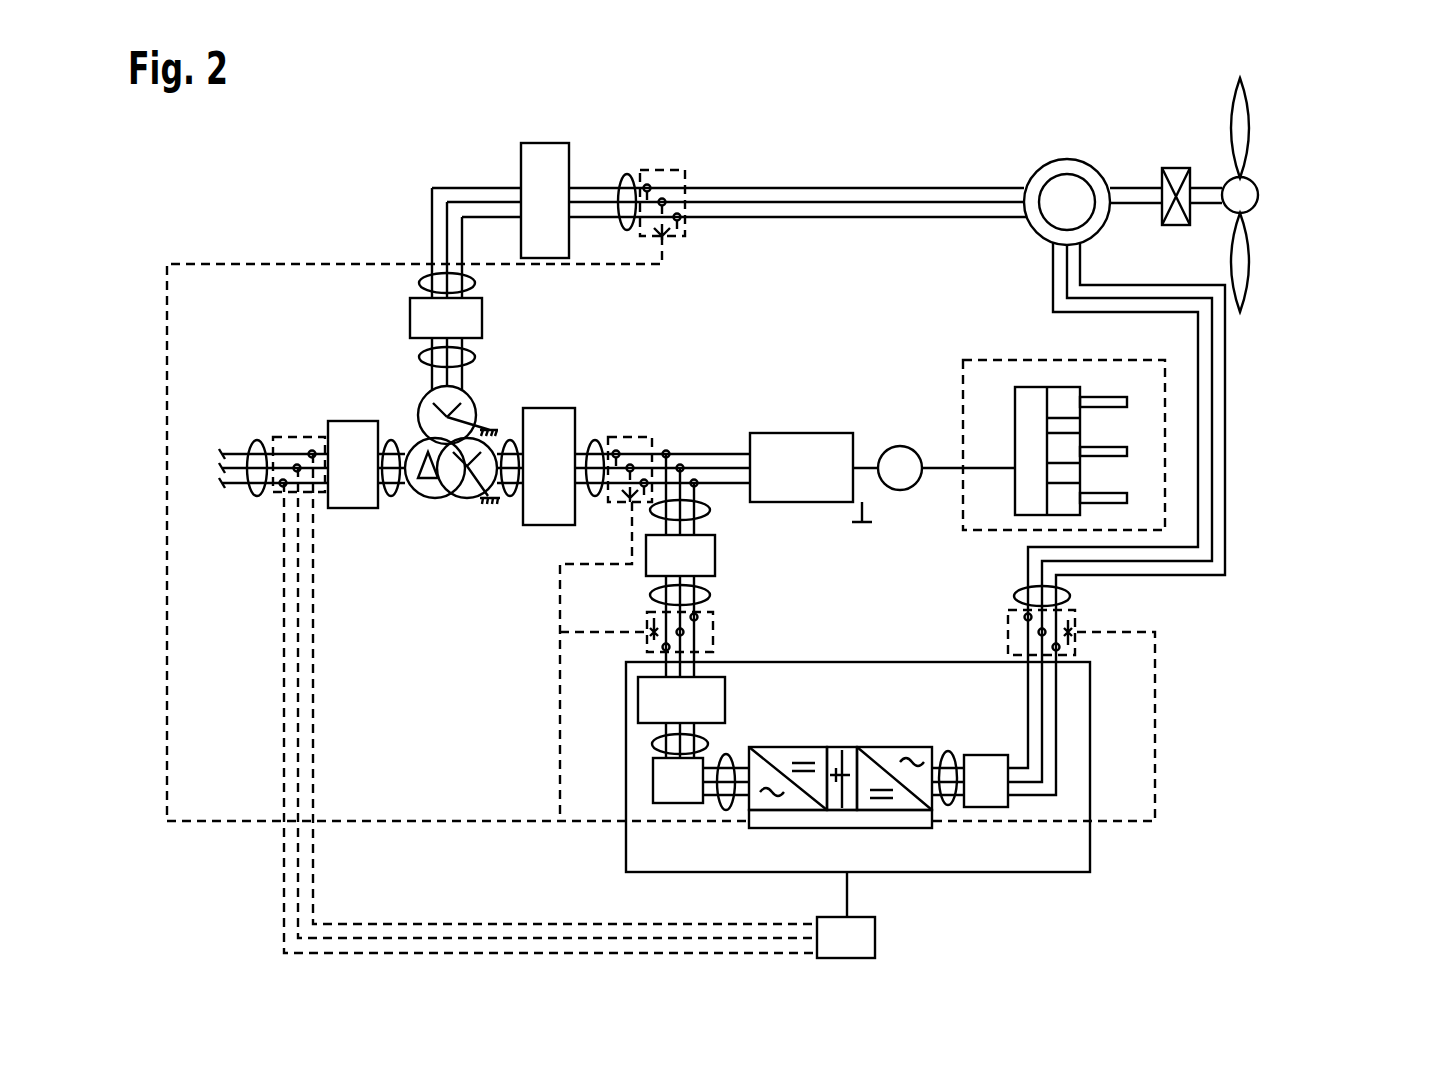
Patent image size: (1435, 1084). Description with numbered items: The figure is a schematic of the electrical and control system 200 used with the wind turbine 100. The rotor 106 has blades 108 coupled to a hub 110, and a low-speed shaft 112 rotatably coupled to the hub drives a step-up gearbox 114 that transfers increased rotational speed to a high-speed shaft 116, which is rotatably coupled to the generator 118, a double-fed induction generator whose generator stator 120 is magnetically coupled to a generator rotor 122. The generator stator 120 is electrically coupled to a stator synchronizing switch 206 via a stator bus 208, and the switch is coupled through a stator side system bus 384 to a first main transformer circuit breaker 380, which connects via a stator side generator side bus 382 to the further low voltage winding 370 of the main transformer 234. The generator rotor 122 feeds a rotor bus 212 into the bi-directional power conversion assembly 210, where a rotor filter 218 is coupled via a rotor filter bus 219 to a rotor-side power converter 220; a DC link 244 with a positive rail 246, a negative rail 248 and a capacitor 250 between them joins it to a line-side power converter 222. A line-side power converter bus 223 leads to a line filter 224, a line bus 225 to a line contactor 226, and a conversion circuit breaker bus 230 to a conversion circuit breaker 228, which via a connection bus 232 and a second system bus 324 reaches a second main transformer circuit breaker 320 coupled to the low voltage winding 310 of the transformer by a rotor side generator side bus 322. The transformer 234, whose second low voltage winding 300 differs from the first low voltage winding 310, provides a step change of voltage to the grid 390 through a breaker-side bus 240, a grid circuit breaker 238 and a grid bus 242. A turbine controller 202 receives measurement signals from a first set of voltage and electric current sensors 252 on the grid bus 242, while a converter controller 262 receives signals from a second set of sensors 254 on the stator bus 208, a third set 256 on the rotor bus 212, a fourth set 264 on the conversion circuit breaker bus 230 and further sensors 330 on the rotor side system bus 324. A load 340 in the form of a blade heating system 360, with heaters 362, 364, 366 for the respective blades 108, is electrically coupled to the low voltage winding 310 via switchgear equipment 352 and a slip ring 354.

The wind turbine 100 is at (1138, 182).
The rotor 106 is at (1360, 148).
The blades 108 is at (1251, 124).
The hub 110 is at (1260, 195).
The low-speed shaft 112 is at (1204, 186).
The step-up gearbox 114 is at (1174, 166).
The high-speed shaft 116 is at (1134, 186).
The generator 118 is at (1052, 122).
The generator stator 120 is at (1067, 159).
The generator rotor 122 is at (1058, 200).
The electrical and control system 200 is at (228, 180).
The turbine controller 202 is at (579, 706).
The stator synchronizing switch 206 is at (542, 142).
The stator bus 208 is at (626, 173).
The power conversion assembly 210 is at (856, 754).
The rotor bus 212 is at (1074, 598).
The rotor filter 218 is at (985, 753).
The rotor filter bus 219 is at (948, 753).
The rotor-side power converter 220 is at (893, 746).
The line-side power converter 222 is at (790, 746).
The line-side power converter bus 223 is at (727, 758).
The line filter 224 is at (652, 784).
The line bus 225 is at (652, 745).
The line contactor 226 is at (637, 703).
The conversion circuit breaker 228 is at (716, 557).
The conversion circuit breaker bus 230 is at (712, 597).
The connection bus 232 is at (712, 511).
The main transformer 234 is at (503, 560).
The grid circuit breaker 238 is at (356, 510).
The breaker-side bus 240 is at (392, 497).
The grid bus 242 is at (256, 438).
The DC link 244 is at (851, 692).
The positive rail 246 is at (858, 746).
The negative rail 248 is at (850, 830).
The capacitor 250 is at (838, 770).
The first set of voltage and electric current sensors 252 is at (250, 512).
The second set of voltage and electric current sensors 254 is at (670, 150).
The third set of voltage and electric current sensors 256 is at (985, 632).
The converter controller 262 is at (915, 830).
The fourth set of voltage and electric current sensors 264 is at (714, 635).
The second low voltage winding 300 is at (435, 500).
The low voltage winding 310 is at (467, 500).
The second main transformer circuit breaker 320 is at (548, 407).
The rotor side generator side bus 322 is at (509, 440).
The second system bus 324 is at (595, 440).
The set of voltage and electric current sensors 330 is at (645, 435).
The load 340 is at (1020, 397).
The switchgear equipment 352 is at (803, 432).
The slip ring 354 is at (900, 445).
The blade heating system 360 is at (1126, 399).
The heater 362 is at (1128, 388).
The heater 364 is at (1128, 437).
The heater 366 is at (1128, 483).
The further low voltage winding 370 is at (420, 410).
The first main transformer circuit breaker 380 is at (408, 318).
The stator side generator side bus 382 is at (418, 357).
The stator side system bus 384 is at (418, 285).
The grid 390 is at (206, 438).